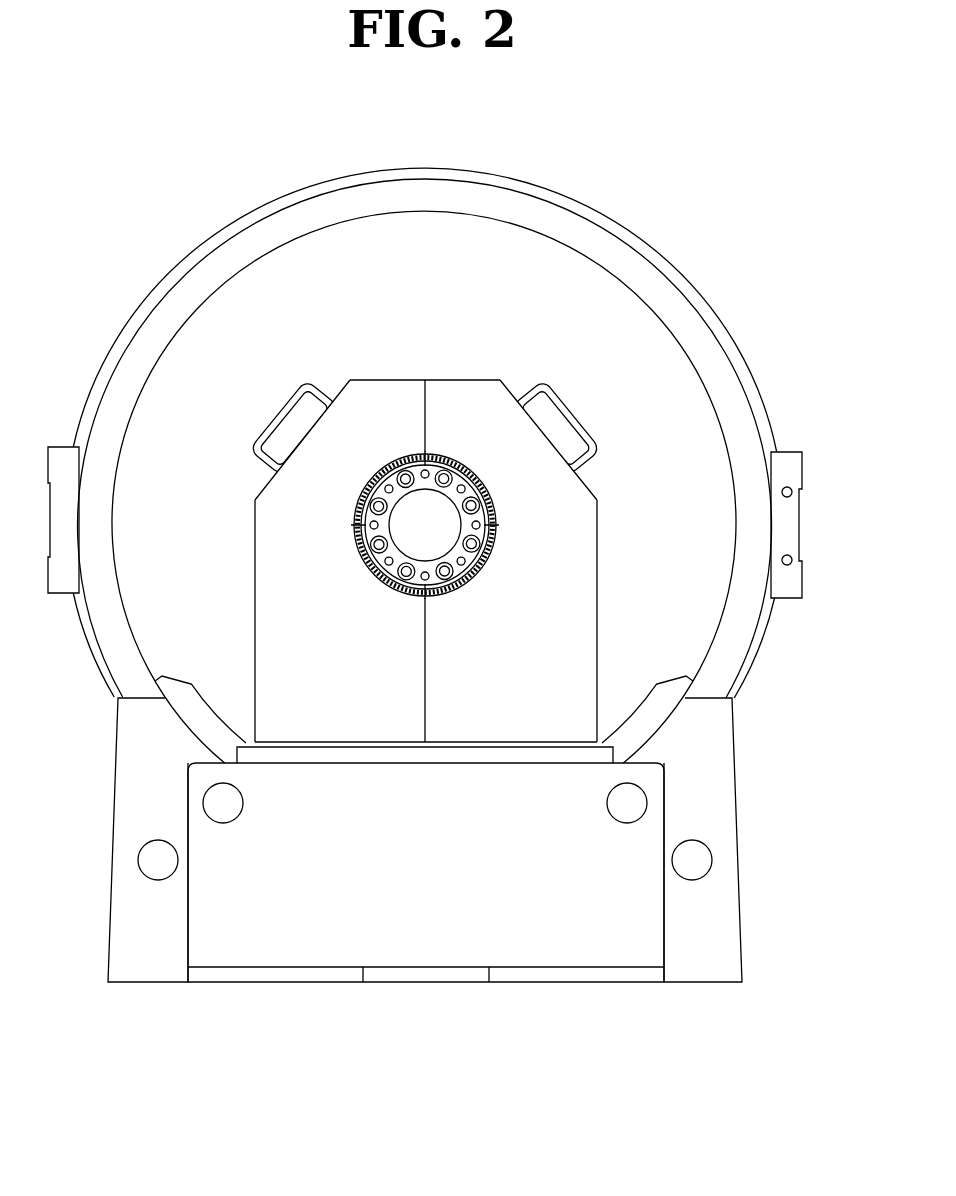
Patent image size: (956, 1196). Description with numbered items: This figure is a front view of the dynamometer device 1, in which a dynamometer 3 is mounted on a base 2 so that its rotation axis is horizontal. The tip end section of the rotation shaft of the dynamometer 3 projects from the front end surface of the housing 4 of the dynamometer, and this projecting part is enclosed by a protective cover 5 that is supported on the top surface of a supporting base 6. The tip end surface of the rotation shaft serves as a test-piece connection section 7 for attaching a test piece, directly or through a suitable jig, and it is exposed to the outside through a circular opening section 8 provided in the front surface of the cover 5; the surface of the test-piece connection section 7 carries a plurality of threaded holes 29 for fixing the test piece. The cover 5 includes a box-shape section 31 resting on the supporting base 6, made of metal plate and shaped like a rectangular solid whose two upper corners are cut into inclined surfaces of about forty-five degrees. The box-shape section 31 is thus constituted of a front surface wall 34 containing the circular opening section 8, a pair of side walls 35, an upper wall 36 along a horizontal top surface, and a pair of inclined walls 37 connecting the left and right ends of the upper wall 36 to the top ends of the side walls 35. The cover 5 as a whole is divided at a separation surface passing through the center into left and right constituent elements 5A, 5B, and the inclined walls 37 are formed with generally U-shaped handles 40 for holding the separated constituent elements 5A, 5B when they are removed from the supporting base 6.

The dynamometer device 1 is at (146, 266).
The base 2 is at (715, 905).
The dynamometer 3 is at (748, 268).
The housing 4 is at (597, 282).
The cover 5 is at (425, 488).
The left constituent element 5A is at (392, 400).
The right constituent element 5B is at (457, 400).
The supporting base 6 is at (620, 952).
The test-piece connection section 7 is at (454, 553).
The circular opening section 8 is at (398, 582).
The threaded holes 29 is at (388, 487).
The box-shape section 31 is at (290, 575).
The front surface wall 34 is at (540, 636).
The side walls 35 is at (255, 620).
The upper wall 36 is at (366, 378).
The inclined walls 37 is at (254, 480).
The handles 40 is at (275, 408).